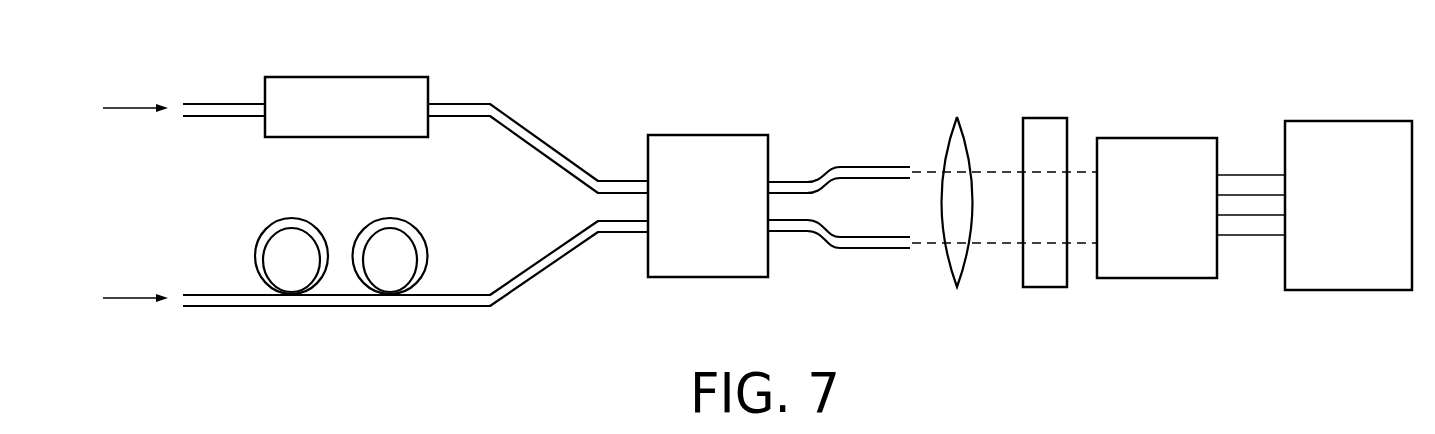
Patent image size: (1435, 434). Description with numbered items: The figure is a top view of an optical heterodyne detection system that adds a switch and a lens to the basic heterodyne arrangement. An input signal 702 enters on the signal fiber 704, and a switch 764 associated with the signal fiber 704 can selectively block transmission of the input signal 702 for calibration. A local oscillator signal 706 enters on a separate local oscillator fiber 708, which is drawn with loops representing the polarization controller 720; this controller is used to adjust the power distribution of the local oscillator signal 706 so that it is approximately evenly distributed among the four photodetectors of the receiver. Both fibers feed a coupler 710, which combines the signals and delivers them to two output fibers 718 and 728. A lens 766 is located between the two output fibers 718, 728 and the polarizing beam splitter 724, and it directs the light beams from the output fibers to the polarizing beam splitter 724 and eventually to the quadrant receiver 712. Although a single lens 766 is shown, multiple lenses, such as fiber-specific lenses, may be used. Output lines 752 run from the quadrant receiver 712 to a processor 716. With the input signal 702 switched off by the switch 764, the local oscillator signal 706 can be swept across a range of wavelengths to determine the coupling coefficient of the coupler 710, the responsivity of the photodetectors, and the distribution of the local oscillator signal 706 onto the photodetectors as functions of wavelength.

The input signal 702 is at (145, 53).
The switch 764 is at (347, 77).
The signal fiber 704 is at (503, 103).
The polarization controller 720 is at (338, 206).
The local oscillator signal 706 is at (160, 378).
The local oscillator optical fiber 708 is at (502, 308).
The coupler 710 is at (710, 135).
The output fiber 718 is at (873, 165).
The output fiber 728 is at (872, 250).
The lens 766 is at (957, 117).
The polarizing beam splitter 724 is at (1045, 118).
The quadrant receiver 712 is at (1160, 138).
The receiver output lines 752 is at (1250, 175).
The processor 716 is at (1353, 121).